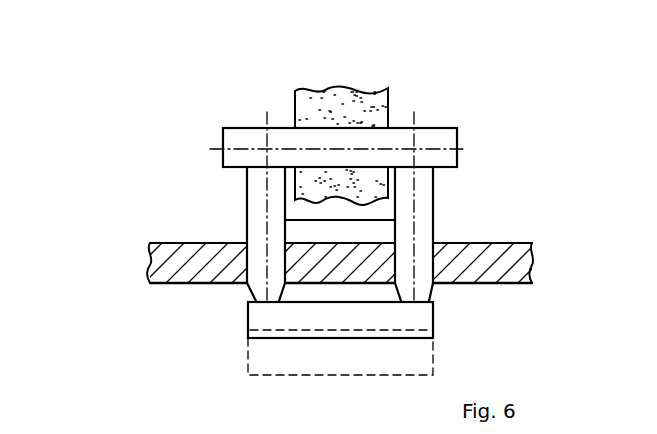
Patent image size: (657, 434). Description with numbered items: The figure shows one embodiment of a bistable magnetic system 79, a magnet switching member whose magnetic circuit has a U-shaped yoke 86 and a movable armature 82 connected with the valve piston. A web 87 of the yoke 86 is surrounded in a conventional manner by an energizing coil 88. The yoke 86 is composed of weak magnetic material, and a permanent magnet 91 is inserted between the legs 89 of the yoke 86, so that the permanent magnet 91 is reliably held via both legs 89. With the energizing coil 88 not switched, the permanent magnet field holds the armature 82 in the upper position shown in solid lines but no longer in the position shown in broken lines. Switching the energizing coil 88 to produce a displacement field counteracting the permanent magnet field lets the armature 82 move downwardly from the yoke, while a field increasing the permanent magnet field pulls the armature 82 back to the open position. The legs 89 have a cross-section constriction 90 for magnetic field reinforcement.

The bistable magnetic system 79 is at (210, 125).
The movable armature 82 is at (420, 331).
The U-shaped yoke 86 is at (417, 210).
The web 87 is at (442, 157).
The energizing coil 88 is at (382, 113).
The legs 89 is at (265, 265).
The cross-section constriction 90 is at (407, 291).
The permanent magnet 91 is at (292, 231).